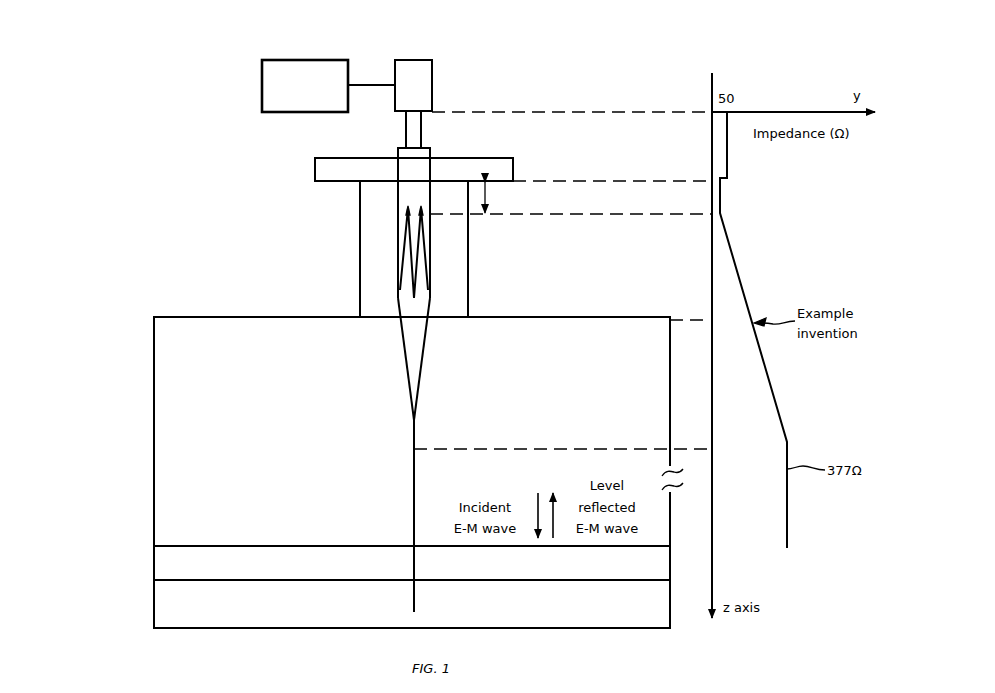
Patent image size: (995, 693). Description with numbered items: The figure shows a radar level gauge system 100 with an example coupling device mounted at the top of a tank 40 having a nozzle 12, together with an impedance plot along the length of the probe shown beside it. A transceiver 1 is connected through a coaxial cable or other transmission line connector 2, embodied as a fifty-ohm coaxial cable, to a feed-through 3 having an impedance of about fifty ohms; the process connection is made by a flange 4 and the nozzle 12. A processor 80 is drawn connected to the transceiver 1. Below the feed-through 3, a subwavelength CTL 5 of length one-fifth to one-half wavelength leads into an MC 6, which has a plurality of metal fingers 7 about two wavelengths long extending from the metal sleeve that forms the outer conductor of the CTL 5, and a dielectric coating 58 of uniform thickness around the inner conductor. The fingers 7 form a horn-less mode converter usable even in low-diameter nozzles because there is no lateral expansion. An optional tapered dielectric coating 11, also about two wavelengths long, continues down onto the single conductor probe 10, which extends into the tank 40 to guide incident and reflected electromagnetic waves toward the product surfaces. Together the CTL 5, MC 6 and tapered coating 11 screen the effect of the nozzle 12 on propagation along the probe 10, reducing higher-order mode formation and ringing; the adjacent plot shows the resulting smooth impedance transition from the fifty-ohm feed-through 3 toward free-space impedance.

The radar level gauge system 100 is at (206, 25).
The processor 80 is at (262, 85).
The transceiver 1 is at (432, 68).
The transmission line connector 2 is at (421, 127).
The feed-through 3 is at (430, 166).
The flange 4 is at (489, 169).
The subwavelength CTL 5 is at (430, 195).
The nozzle 12 is at (360, 216).
The metal fingers 7 is at (410, 228).
The MC 6 is at (393, 213).
The dielectric coating 58 is at (430, 275).
The tapered dielectric coating 11 is at (438, 288).
The single conductor probe 10 is at (412, 433).
The tank 40 is at (154, 470).